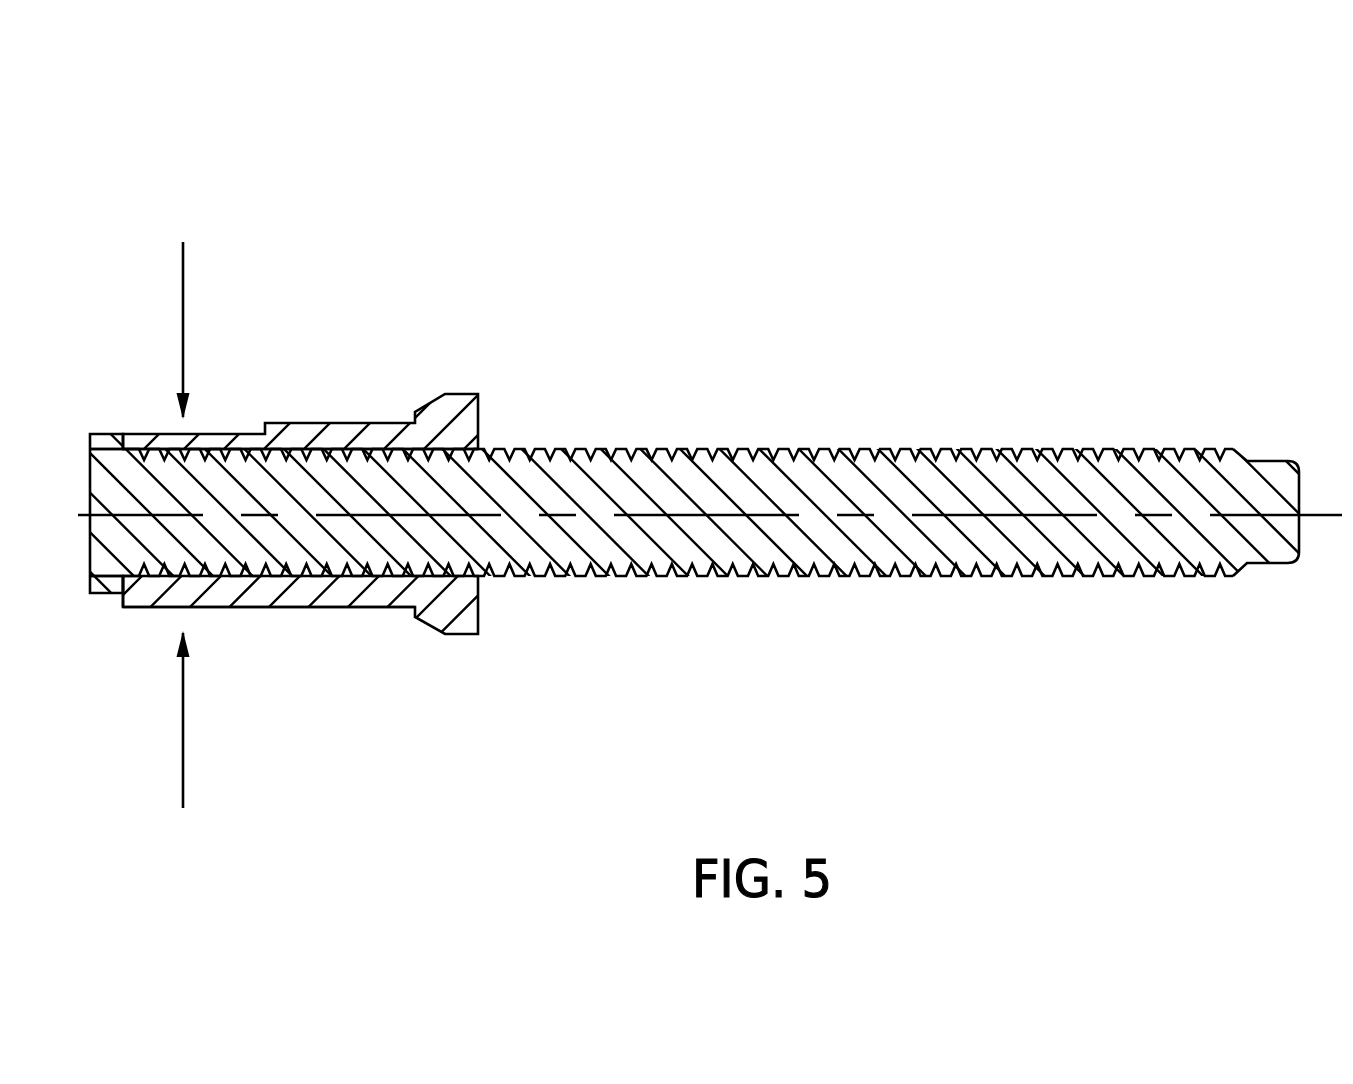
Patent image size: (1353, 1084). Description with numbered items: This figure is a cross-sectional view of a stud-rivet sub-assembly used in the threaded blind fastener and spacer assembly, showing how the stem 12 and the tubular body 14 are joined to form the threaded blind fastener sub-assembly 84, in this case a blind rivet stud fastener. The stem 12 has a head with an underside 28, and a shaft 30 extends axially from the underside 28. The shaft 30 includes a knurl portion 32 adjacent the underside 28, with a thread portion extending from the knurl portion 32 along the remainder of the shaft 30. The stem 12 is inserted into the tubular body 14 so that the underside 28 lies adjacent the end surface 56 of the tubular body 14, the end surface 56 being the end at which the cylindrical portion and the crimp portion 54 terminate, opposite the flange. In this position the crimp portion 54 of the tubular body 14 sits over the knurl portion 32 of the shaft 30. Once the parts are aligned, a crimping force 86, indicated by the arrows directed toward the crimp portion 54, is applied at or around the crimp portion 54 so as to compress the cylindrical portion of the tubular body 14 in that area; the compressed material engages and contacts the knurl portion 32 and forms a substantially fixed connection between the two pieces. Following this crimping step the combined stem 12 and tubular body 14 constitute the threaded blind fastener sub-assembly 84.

The threaded blind fastener sub-assembly 84 is at (676, 452).
The stem 12 is at (676, 506).
The tubular body 14 is at (299, 464).
The underside 28 is at (128, 452).
The shaft 30 is at (953, 582).
The knurl portion 32 is at (170, 532).
The crimp portion 54 is at (320, 608).
The end surface 56 is at (123, 596).
The crimping force 86 is at (185, 327).